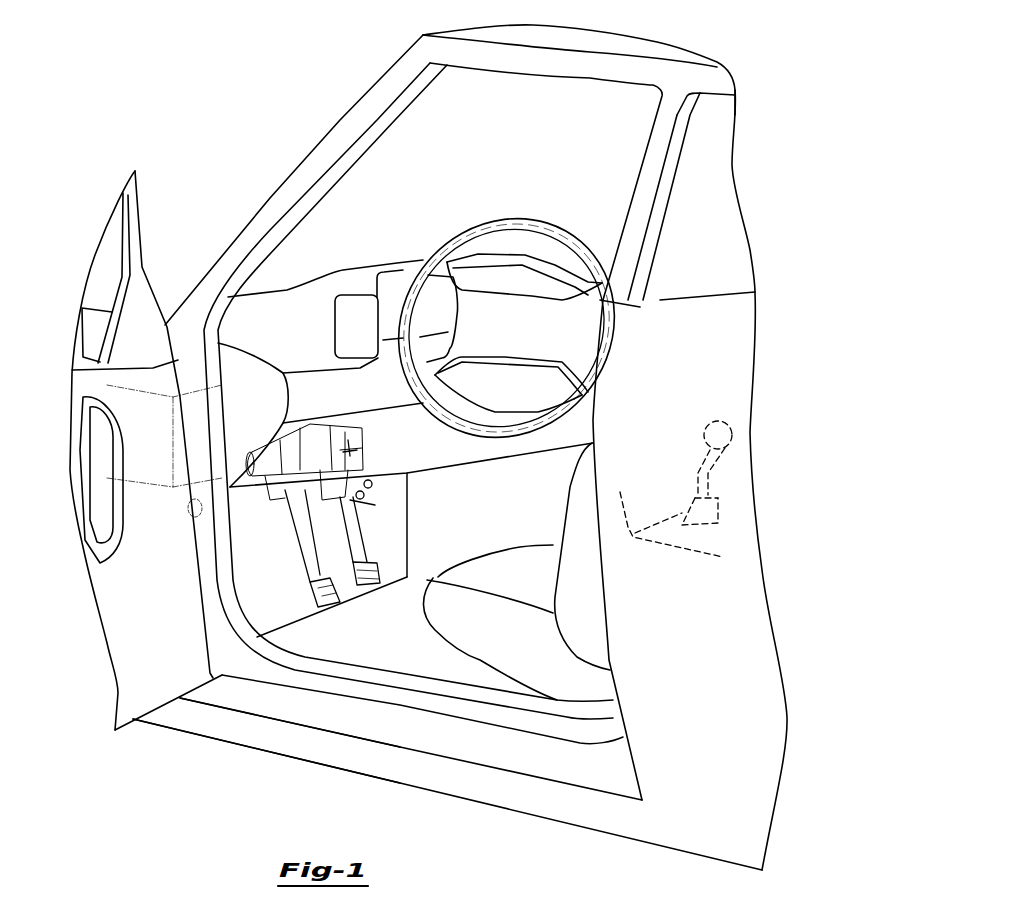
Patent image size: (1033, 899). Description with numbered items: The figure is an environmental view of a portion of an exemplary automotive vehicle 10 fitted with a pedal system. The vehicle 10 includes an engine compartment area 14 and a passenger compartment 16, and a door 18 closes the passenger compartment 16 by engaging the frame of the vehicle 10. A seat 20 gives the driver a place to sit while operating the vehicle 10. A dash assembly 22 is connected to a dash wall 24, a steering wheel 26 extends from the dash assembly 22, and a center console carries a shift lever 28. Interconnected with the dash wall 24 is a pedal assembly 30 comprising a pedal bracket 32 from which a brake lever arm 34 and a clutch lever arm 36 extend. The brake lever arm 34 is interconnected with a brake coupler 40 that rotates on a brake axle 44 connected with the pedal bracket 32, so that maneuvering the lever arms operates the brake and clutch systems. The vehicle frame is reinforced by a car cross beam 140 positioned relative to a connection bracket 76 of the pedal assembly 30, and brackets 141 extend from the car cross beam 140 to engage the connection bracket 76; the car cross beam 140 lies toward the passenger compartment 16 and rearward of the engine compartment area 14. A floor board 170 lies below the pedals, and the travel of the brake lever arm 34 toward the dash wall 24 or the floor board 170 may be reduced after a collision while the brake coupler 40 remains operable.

The automotive vehicle 10 is at (182, 58).
The engine compartment area 14 is at (138, 453).
The passenger compartment 16 is at (298, 639).
The door 18 is at (138, 698).
The seat 20 is at (452, 615).
The dash assembly 22 is at (260, 302).
The dash wall 24 is at (264, 562).
The steering wheel 26 is at (520, 222).
The shift lever 28 is at (712, 422).
The pedal assembly 30 is at (262, 579).
The pedal bracket 32 is at (367, 515).
The brake lever arm 34 is at (353, 565).
The clutch lever arm 36 is at (297, 561).
The brake coupler 40 is at (365, 495).
The brake axle 44 is at (348, 446).
The connection bracket 76 is at (375, 483).
The car cross beam 140 is at (208, 502).
The brackets 141 is at (187, 538).
The floor board 170 is at (374, 661).